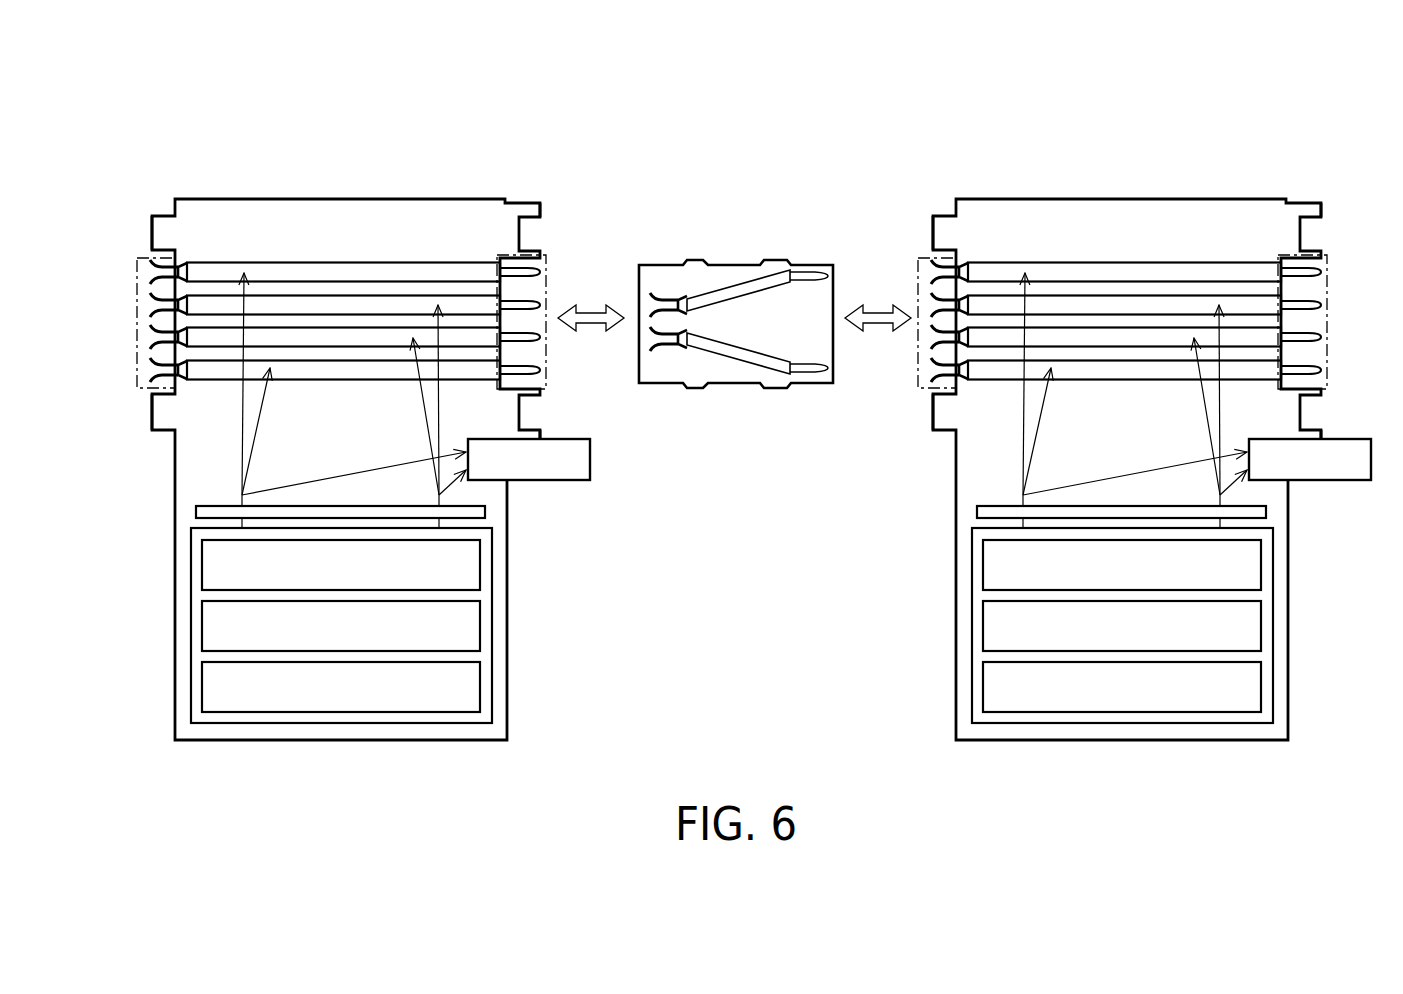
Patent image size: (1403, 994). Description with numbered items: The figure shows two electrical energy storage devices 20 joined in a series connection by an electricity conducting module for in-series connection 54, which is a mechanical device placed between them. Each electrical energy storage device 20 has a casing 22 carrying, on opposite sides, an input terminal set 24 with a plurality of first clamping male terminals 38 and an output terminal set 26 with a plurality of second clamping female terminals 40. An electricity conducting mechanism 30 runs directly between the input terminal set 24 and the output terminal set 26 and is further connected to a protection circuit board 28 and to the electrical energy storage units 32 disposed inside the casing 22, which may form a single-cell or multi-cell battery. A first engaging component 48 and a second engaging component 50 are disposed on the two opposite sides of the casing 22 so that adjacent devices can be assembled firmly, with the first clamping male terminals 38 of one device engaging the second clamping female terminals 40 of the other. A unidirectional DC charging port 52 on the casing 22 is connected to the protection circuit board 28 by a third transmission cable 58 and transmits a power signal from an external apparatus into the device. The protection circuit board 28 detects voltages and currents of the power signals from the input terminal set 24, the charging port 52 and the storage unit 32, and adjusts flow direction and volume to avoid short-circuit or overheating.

The electrical energy storage device 20 is at (236, 98).
The casing 22 is at (214, 211).
The input terminal set 24 is at (548, 270).
The output terminal set 26 is at (140, 290).
The protection circuit board 28 is at (200, 512).
The electricity conducting mechanism 30 is at (352, 263).
The electrical energy storage unit 32 is at (732, 625).
The first clamping male terminal 38 is at (538, 372).
The second clamping female terminal 40 is at (148, 378).
The first engaging component 48 is at (163, 226).
The second engaging component 50 is at (528, 207).
The unidirectional DC charging port 52 is at (513, 472).
The electricity conducting module for in-series connection 54 is at (722, 270).
The third transmission cable 58 is at (355, 472).